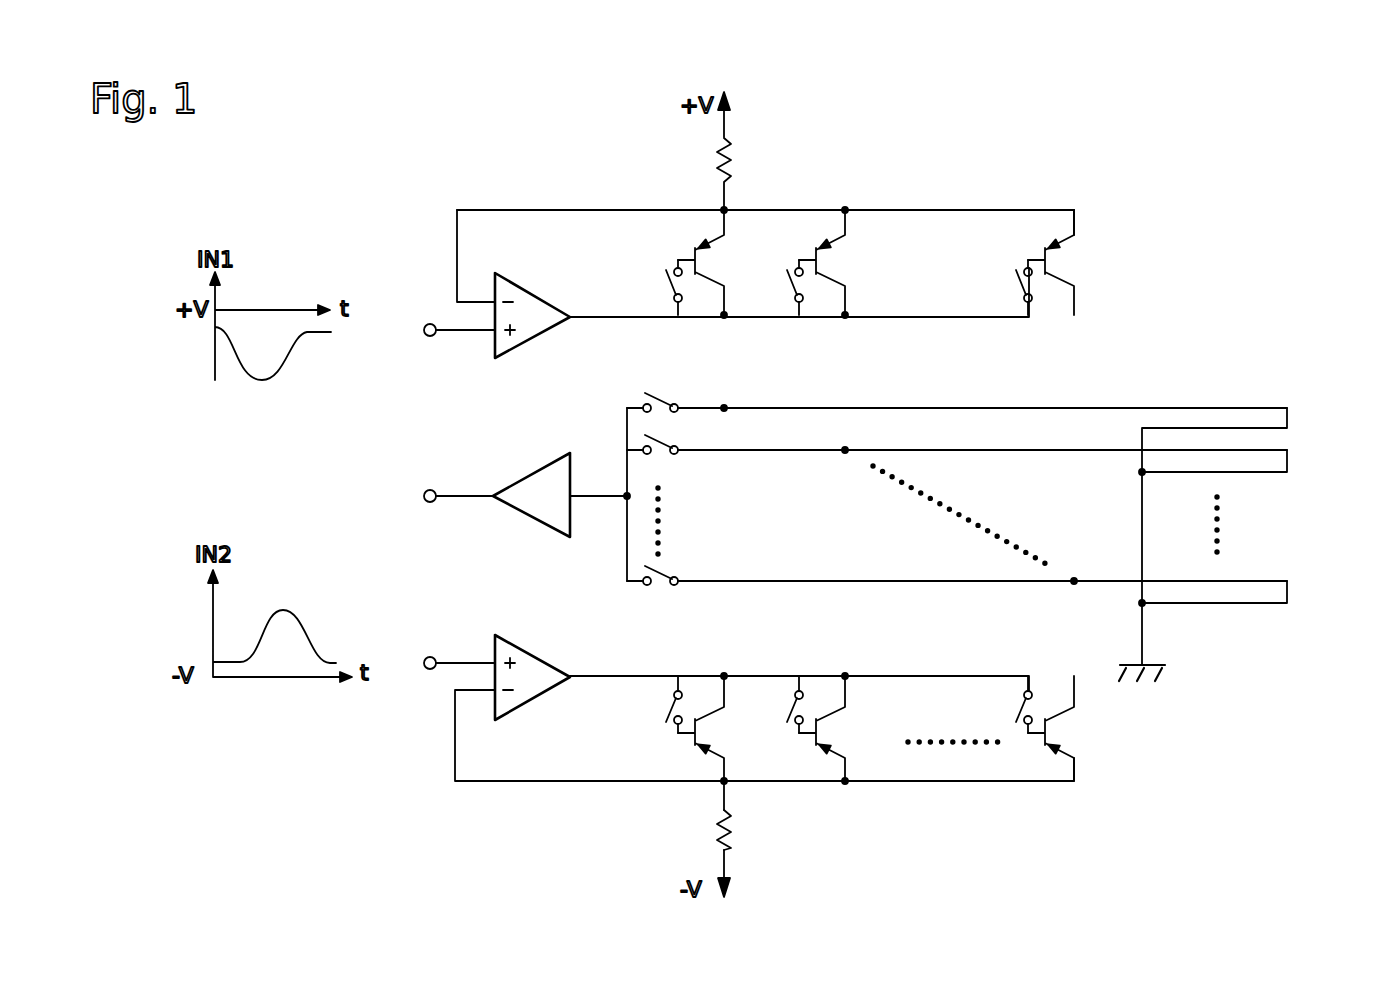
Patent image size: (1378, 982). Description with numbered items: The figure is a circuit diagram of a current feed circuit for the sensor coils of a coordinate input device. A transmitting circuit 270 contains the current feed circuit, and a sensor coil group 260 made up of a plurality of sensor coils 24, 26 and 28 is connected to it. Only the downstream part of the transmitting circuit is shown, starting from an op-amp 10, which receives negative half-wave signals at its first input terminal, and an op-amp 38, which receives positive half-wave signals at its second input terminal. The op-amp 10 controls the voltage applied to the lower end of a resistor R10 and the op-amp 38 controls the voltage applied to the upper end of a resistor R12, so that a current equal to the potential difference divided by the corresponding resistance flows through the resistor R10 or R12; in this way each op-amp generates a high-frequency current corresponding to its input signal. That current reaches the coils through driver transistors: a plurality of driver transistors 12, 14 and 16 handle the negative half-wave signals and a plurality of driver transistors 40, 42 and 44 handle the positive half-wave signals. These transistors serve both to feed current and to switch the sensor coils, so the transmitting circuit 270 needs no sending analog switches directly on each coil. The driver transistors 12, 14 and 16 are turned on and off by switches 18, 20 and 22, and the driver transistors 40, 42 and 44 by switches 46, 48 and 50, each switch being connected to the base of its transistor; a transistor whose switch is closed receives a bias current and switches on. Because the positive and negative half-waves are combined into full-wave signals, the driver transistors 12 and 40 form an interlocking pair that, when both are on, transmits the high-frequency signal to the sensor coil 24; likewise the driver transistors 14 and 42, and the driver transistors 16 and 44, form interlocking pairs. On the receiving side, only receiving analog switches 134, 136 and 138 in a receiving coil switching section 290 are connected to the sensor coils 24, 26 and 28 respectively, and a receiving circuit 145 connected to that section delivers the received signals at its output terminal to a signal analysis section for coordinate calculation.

The op-amp 10 is at (543, 297).
The driver transistor 12 is at (712, 268).
The driver transistor 14 is at (838, 278).
The driver transistor 16 is at (1068, 278).
The switch 18 is at (668, 283).
The switch 20 is at (789, 283).
The switch 22 is at (1018, 283).
The sensor coil 24 is at (1287, 407).
The sensor coil 26 is at (1287, 449).
The sensor coil 28 is at (1287, 580).
The op-amp 38 is at (541, 660).
The driver transistor 40 is at (712, 722).
The driver transistor 42 is at (832, 716).
The driver transistor 44 is at (1064, 716).
The switch 46 is at (668, 709).
The switch 48 is at (789, 706).
The switch 50 is at (1018, 705).
The receiving analog switch 134 is at (668, 414).
The receiving analog switch 136 is at (668, 456).
The receiving analog switch 138 is at (668, 587).
The receiving circuit 145 is at (527, 475).
The sensor coil group 260 is at (1288, 374).
The transmitting circuit 270 is at (1072, 70).
The receiving coil switching section 290 is at (695, 388).
The resistor R10 is at (733, 151).
The resistor R12 is at (734, 868).